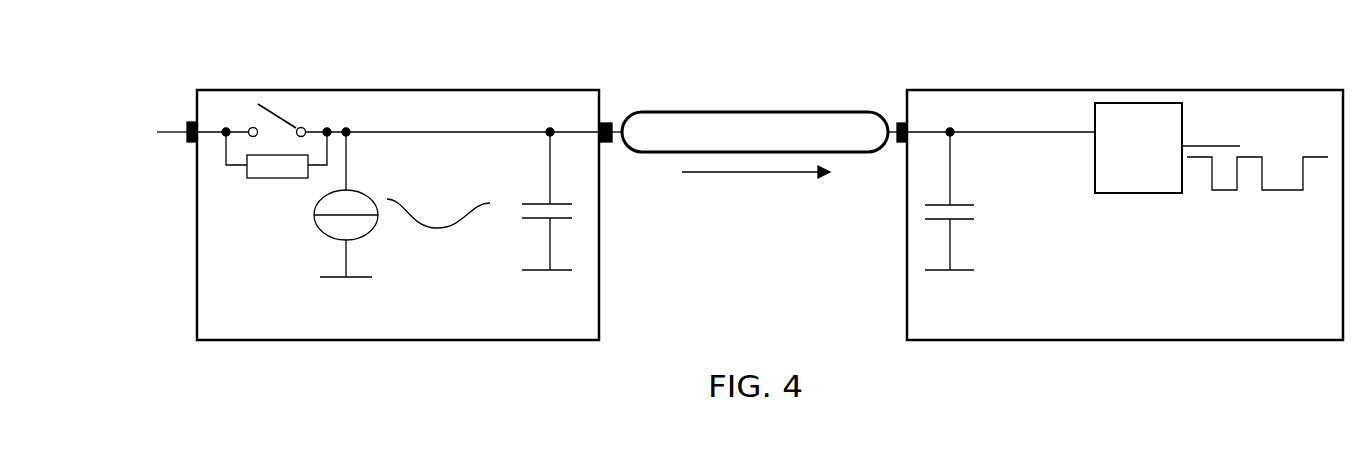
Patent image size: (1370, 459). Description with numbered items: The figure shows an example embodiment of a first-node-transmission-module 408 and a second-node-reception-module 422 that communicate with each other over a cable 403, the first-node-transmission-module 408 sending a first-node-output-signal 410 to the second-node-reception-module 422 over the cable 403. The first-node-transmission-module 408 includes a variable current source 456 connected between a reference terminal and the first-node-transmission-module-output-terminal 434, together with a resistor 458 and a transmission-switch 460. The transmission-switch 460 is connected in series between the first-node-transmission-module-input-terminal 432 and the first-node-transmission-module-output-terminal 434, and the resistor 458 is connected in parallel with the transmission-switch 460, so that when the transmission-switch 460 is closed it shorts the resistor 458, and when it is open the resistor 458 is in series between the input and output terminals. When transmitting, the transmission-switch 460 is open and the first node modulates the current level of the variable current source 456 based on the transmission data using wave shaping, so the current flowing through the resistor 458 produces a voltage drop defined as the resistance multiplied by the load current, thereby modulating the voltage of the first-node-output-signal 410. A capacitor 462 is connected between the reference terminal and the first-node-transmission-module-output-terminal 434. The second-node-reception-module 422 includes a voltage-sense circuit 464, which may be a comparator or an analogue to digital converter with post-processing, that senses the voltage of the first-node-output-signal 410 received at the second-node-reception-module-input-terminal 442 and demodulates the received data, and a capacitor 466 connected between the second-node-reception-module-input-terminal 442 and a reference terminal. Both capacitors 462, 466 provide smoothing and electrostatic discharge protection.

The cable 403 is at (800, 90).
The first-node-transmission-module 408 is at (466, 341).
The first-node-output-signal 410 is at (750, 210).
The second-node-reception-module 422 is at (1270, 90).
The first-node-transmission-module-input-terminal 432 is at (187, 139).
The first-node-transmission-module-output-terminal 434 is at (614, 123).
The second-node-reception-module-input-terminal 442 is at (900, 123).
The variable current source 456 is at (314, 228).
The resistor 458 is at (247, 176).
The transmission-switch 460 is at (246, 112).
The capacitor 462 is at (575, 220).
The voltage-sense circuit 464 is at (1167, 103).
The capacitor 466 is at (932, 220).